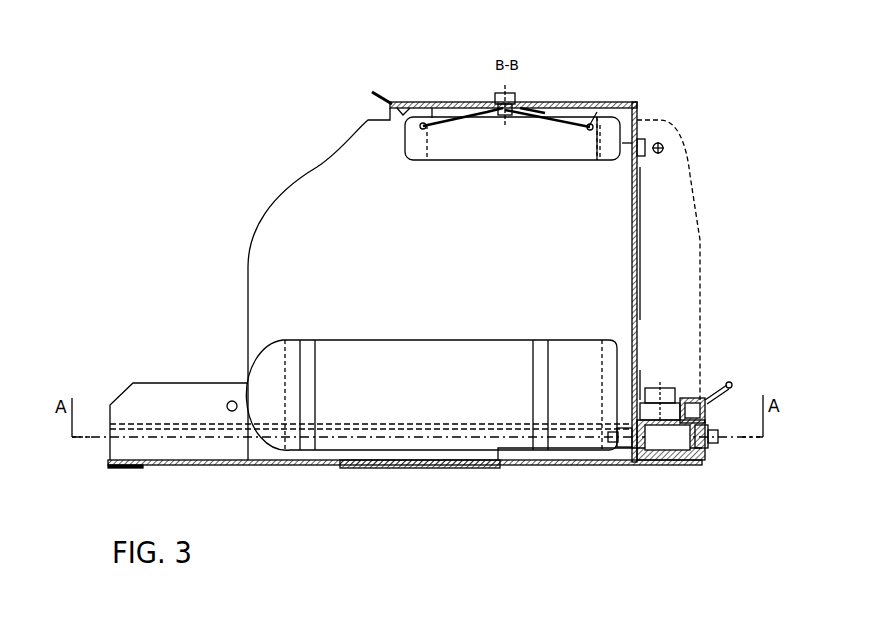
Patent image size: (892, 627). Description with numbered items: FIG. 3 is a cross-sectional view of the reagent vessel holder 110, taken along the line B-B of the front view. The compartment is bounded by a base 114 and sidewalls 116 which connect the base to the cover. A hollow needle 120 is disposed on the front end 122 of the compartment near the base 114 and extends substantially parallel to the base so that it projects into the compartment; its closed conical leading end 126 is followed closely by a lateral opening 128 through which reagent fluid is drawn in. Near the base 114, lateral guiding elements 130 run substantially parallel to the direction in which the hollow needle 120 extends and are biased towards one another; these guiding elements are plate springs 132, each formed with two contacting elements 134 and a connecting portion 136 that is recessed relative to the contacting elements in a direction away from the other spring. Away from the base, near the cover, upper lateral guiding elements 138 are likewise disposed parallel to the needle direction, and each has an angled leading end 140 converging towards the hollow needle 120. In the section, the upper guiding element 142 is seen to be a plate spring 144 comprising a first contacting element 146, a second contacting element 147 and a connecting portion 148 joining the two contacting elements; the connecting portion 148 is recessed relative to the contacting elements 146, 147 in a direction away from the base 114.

The reagent vessel holder 110 is at (690, 70).
The base 114 is at (213, 463).
The sidewalls 116 is at (290, 293).
The hollow needle 120 is at (627, 467).
The front end 122 is at (658, 240).
The conical leading end 126 is at (598, 435).
The lateral opening 128 is at (612, 448).
The lateral guiding elements 130 is at (355, 405).
The plate springs 132 is at (443, 395).
The contacting elements 134 is at (275, 372).
The connecting portion 136 is at (413, 415).
The upper lateral guiding elements 138 is at (610, 132).
The angled leading end 140 is at (425, 143).
The upper guiding element 142 is at (460, 104).
The plate spring 144 is at (547, 118).
The first contacting element 146 is at (423, 128).
The second contacting element 147 is at (598, 118).
The connecting portion 148 is at (540, 113).